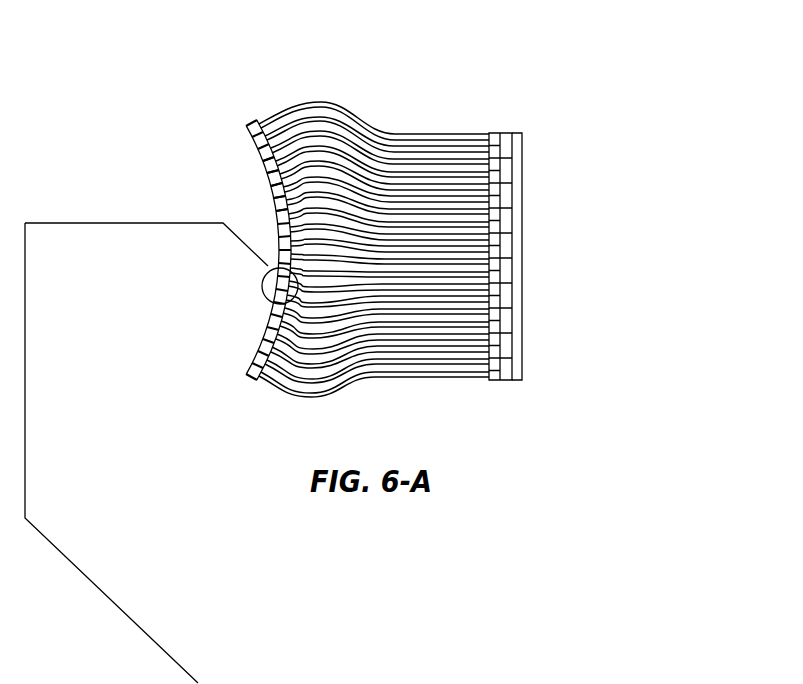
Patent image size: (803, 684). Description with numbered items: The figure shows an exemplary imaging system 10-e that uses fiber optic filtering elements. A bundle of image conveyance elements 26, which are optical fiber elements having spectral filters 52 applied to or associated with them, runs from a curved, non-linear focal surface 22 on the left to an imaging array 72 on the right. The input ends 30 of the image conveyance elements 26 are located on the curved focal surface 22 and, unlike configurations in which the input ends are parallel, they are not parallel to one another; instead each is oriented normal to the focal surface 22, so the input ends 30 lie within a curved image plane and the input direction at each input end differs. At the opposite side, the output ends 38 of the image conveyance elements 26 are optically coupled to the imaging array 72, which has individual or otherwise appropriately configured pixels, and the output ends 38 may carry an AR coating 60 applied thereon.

The imaging system 10-e is at (571, 62).
The focal surface 22 is at (244, 347).
The image conveyance elements 26 is at (403, 124).
The input ends 30 is at (283, 117).
The output ends 38 is at (438, 378).
The spectral filters 52 is at (272, 212).
The AR coating 60 is at (495, 132).
The imaging array 72 is at (530, 350).